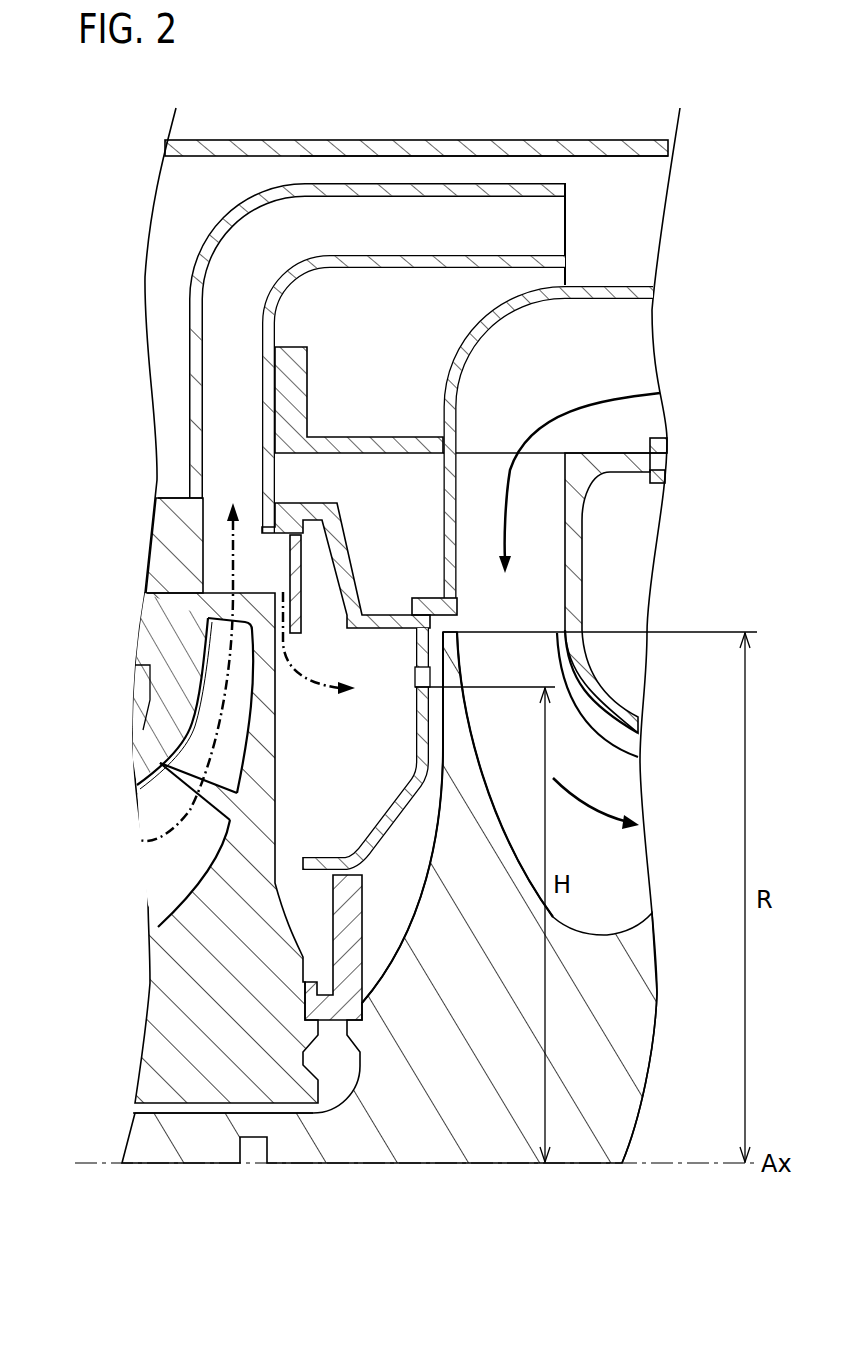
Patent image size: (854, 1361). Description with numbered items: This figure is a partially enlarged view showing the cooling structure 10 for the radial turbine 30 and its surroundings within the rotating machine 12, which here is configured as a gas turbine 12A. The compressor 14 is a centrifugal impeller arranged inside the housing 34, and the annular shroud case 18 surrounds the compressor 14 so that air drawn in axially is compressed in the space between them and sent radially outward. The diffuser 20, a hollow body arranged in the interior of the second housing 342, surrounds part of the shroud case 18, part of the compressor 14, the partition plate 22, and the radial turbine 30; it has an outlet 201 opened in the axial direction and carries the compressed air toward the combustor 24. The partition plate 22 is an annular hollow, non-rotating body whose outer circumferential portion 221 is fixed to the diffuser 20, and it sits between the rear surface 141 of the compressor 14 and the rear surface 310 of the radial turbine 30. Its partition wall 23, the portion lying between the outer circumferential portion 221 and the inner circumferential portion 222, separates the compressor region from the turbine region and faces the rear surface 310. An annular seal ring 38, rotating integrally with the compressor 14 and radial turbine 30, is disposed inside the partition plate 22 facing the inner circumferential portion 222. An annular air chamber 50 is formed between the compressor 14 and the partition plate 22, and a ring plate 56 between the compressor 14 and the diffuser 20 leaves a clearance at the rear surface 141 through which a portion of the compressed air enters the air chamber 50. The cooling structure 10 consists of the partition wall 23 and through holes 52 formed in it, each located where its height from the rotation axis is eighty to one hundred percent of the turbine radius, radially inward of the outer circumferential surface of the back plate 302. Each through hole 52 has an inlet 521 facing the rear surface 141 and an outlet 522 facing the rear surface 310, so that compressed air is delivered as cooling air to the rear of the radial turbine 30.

The rotating machine 12 is at (647, 67).
The gas turbine 12A is at (708, 67).
The housing 34 is at (376, 141).
The second housing 342 is at (418, 139).
The diffuser 20 is at (342, 182).
The outlet 201 is at (567, 212).
The combustor 24 is at (615, 285).
The outer circumferential portion 221 is at (303, 400).
The partition plate 22 is at (348, 510).
The ring plate 56 is at (300, 563).
The outlet 522 is at (430, 662).
The inlet 521 is at (413, 670).
The through holes 52 is at (430, 678).
The back plate 302 is at (458, 718).
The rear surface 310 is at (432, 738).
The partition wall 23 is at (412, 774).
The rear surface 141 is at (277, 792).
The inner circumferential portion 222 is at (325, 855).
The cooling structure 10 is at (417, 802).
The air chamber 50 is at (382, 800).
The seal ring 38 is at (355, 940).
The shroud case 18 is at (157, 635).
The compressor 14 is at (143, 864).
The radial turbine 30 is at (657, 1020).